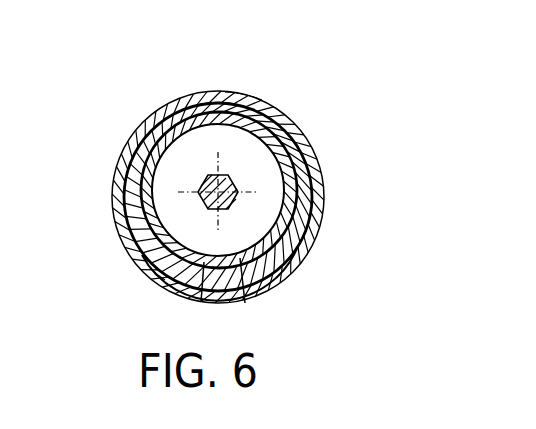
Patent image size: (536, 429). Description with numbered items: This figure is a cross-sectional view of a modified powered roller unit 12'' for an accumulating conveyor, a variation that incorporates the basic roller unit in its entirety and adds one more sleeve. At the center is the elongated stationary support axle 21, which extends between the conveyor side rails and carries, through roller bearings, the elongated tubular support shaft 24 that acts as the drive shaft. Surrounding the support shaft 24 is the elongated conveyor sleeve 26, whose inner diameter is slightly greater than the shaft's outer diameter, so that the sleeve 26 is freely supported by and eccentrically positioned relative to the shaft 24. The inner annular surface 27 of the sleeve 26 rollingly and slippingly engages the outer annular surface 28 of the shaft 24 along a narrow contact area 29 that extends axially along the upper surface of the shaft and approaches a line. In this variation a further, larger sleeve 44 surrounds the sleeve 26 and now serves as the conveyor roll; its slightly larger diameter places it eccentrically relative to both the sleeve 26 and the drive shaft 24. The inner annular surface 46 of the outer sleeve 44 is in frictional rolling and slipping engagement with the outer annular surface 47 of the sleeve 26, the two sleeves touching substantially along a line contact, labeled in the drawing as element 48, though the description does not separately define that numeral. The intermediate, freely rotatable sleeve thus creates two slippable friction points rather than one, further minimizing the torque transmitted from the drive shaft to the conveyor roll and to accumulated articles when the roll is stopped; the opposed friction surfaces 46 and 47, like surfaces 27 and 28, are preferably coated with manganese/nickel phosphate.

The modified powered roller unit 12'' is at (185, 171).
The stationary support axle 21 is at (232, 178).
The tubular support shaft 24 is at (276, 282).
The conveyor sleeve 26 is at (302, 205).
The inner annular surface 27 is at (155, 275).
The outer annular surface 28 is at (203, 300).
The narrow contact area 29 is at (243, 96).
The outer sleeve 44 is at (122, 203).
The inner annular surface 46 is at (288, 252).
The outer annular surface 47 is at (247, 292).
The layer 48 is at (223, 107).